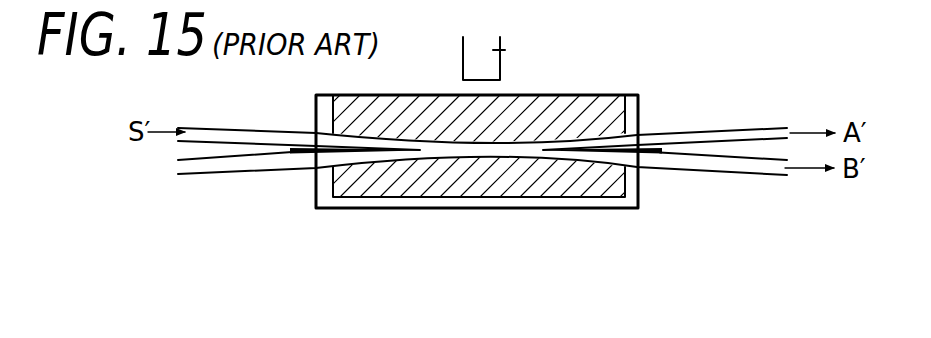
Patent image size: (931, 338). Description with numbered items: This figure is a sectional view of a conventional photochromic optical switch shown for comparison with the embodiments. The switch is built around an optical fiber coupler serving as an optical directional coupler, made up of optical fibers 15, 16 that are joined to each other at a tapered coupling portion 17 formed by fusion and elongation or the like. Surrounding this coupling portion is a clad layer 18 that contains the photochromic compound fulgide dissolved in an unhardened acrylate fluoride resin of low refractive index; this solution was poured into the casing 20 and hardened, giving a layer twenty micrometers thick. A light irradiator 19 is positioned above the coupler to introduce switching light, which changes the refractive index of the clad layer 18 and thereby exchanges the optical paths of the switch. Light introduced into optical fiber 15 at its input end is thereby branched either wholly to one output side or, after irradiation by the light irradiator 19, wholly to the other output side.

The optical fiber 15 is at (243, 137).
The optical fiber 16 is at (263, 165).
The tapered coupling portion 17 is at (407, 157).
The clad layer 18 is at (545, 182).
The light irradiator 19 is at (505, 50).
The casing 20 is at (613, 215).